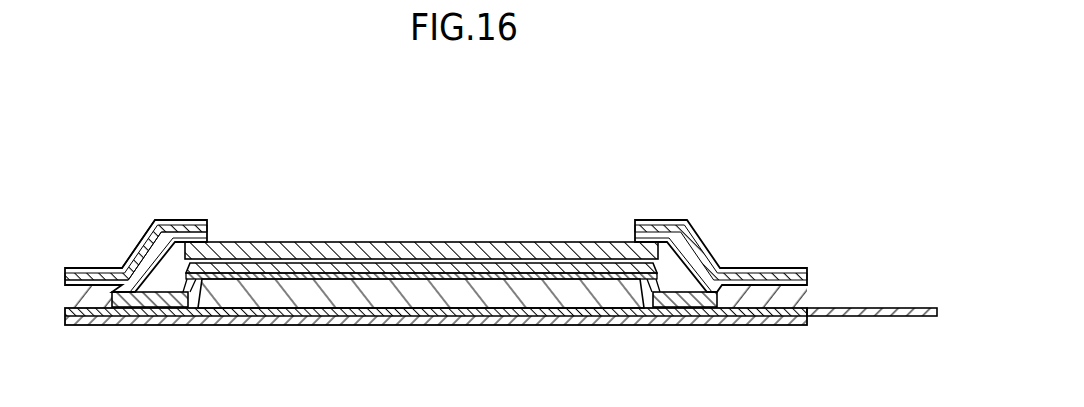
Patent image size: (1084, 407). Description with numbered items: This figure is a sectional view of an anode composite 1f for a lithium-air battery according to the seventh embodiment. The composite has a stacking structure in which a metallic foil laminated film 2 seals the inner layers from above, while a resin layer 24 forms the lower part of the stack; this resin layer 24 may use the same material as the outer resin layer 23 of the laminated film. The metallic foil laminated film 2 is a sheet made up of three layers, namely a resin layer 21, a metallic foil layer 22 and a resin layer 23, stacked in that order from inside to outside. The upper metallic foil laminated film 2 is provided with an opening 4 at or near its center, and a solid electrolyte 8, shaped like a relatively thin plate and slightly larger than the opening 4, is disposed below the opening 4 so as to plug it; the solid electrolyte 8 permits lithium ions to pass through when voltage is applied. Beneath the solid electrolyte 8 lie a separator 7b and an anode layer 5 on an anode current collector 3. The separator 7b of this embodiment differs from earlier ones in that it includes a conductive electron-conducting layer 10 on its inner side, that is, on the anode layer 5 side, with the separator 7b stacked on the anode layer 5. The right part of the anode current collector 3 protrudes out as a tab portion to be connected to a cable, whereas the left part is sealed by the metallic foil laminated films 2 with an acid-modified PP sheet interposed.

The anode composite 1f is at (728, 165).
The metallic foil laminated film 2 is at (95, 118).
The resin layer 21 is at (91, 286).
The metallic foil layer 22 is at (185, 232).
The resin layer 23 is at (208, 221).
The anode current collector 3 is at (867, 310).
The opening 4 is at (636, 226).
The anode layer 5 is at (552, 292).
The separator 7b is at (352, 268).
The solid electrolyte 8 is at (289, 250).
The electron-conducting layer 10 is at (408, 276).
The resin layer 24 is at (380, 326).